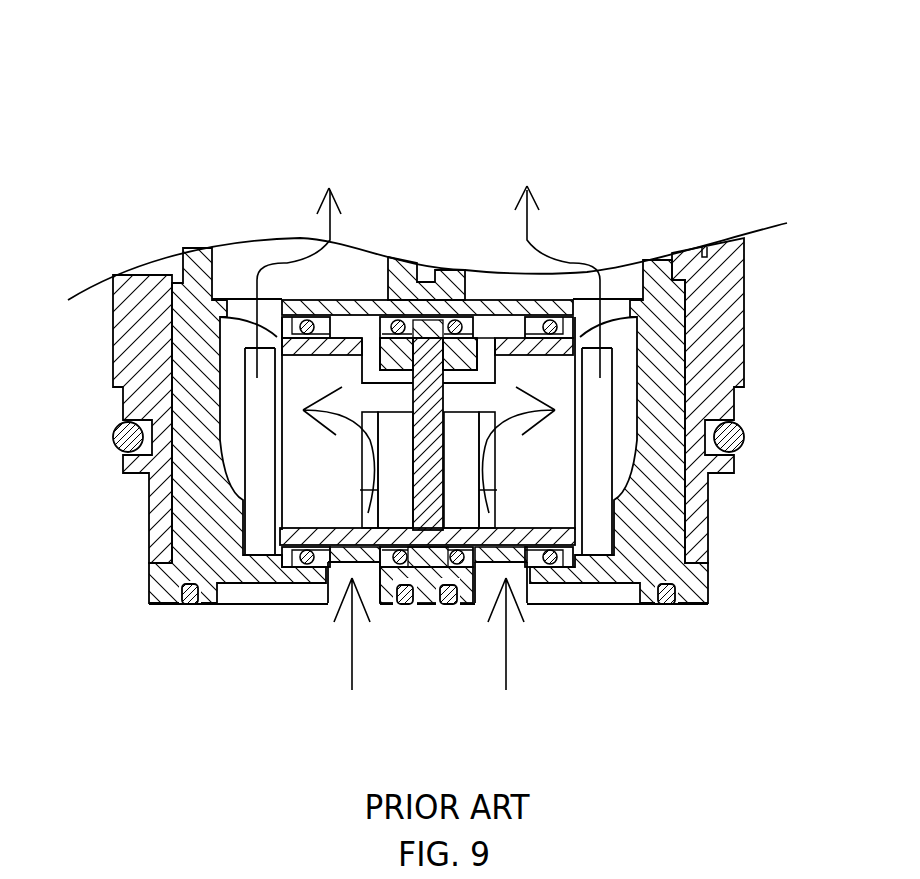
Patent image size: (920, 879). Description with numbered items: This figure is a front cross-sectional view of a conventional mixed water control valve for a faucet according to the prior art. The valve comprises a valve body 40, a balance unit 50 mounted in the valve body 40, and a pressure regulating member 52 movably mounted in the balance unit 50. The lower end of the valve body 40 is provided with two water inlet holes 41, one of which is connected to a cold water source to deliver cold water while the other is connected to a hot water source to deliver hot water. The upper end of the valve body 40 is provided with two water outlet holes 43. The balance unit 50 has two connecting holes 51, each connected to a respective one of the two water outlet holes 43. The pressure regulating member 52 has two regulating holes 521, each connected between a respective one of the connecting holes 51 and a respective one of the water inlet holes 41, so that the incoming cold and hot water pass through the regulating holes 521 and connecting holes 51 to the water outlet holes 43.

The valve body 40 is at (710, 525).
The water inlet holes 41 is at (340, 577).
The water outlet holes 43 is at (255, 250).
The balance unit 50 is at (583, 420).
The connecting holes 51 is at (340, 328).
The pressure regulating member 52 is at (283, 531).
The regulating holes 521 is at (372, 345).